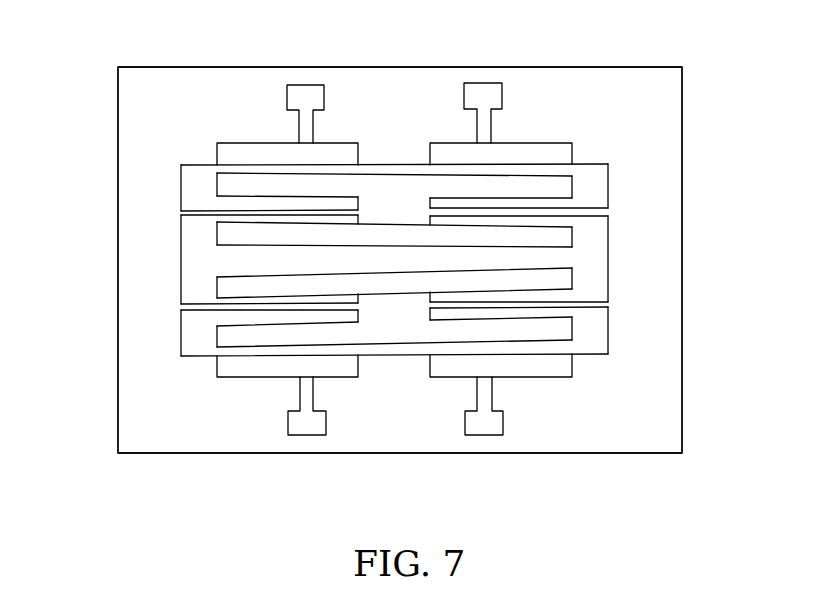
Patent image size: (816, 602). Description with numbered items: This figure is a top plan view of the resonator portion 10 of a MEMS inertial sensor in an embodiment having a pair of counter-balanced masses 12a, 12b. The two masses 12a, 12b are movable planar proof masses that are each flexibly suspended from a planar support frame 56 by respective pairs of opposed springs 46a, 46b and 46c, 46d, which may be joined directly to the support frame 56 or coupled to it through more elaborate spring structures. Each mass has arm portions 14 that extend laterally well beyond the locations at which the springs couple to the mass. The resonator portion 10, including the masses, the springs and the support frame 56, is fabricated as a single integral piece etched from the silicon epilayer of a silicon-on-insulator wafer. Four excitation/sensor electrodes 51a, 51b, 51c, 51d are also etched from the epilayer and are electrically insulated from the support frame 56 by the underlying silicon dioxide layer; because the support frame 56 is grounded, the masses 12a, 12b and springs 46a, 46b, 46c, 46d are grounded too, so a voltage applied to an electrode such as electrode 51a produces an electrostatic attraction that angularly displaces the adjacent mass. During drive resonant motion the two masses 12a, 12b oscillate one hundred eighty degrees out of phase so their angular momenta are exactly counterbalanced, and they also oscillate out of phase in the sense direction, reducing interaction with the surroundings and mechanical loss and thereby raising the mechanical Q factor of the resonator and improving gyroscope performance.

The resonator portion 10 is at (118, 123).
The first counter-balanced mass 12a is at (392, 188).
The second counter-balanced mass 12b is at (393, 320).
The arm portion 14 is at (548, 187).
The first spring 46a is at (531, 215).
The second spring 46b is at (537, 304).
The third spring 46c is at (213, 213).
The fourth spring 46d is at (213, 308).
The first excitation/sensor electrode 51a is at (308, 90).
The second excitation/sensor electrode 51b is at (490, 90).
The third excitation/sensor electrode 51c is at (309, 427).
The fourth excitation/sensor electrode 51d is at (488, 427).
The support frame 56 is at (630, 440).